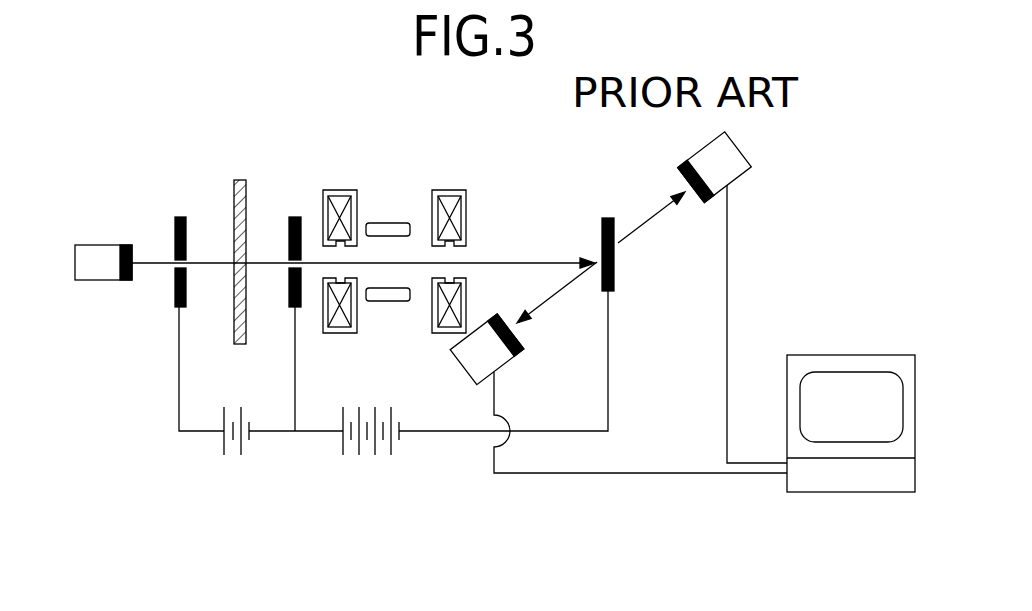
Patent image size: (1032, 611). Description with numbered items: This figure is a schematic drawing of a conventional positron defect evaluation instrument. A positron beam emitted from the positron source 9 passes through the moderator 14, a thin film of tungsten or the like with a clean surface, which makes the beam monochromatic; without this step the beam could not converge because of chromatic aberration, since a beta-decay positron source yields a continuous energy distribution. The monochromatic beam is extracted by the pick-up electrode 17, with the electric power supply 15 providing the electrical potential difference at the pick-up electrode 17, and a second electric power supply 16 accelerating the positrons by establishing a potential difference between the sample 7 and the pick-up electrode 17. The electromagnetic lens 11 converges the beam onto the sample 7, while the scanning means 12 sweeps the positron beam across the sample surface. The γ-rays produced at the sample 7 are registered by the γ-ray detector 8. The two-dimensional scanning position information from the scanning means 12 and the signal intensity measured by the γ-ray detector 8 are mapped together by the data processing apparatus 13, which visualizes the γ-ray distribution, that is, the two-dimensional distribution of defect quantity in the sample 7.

The sample 7 is at (611, 230).
The γ-ray detector 8 is at (600, 257).
The positron source 9 is at (103, 241).
The electromagnetic lens 11 is at (332, 190).
The scanning means 12 is at (389, 223).
The data processing apparatus 13 is at (851, 449).
The moderator 14 is at (218, 267).
The electric power supply 15 is at (232, 456).
The electric power supply 16 is at (371, 456).
The pick-up electrode 17 is at (295, 217).